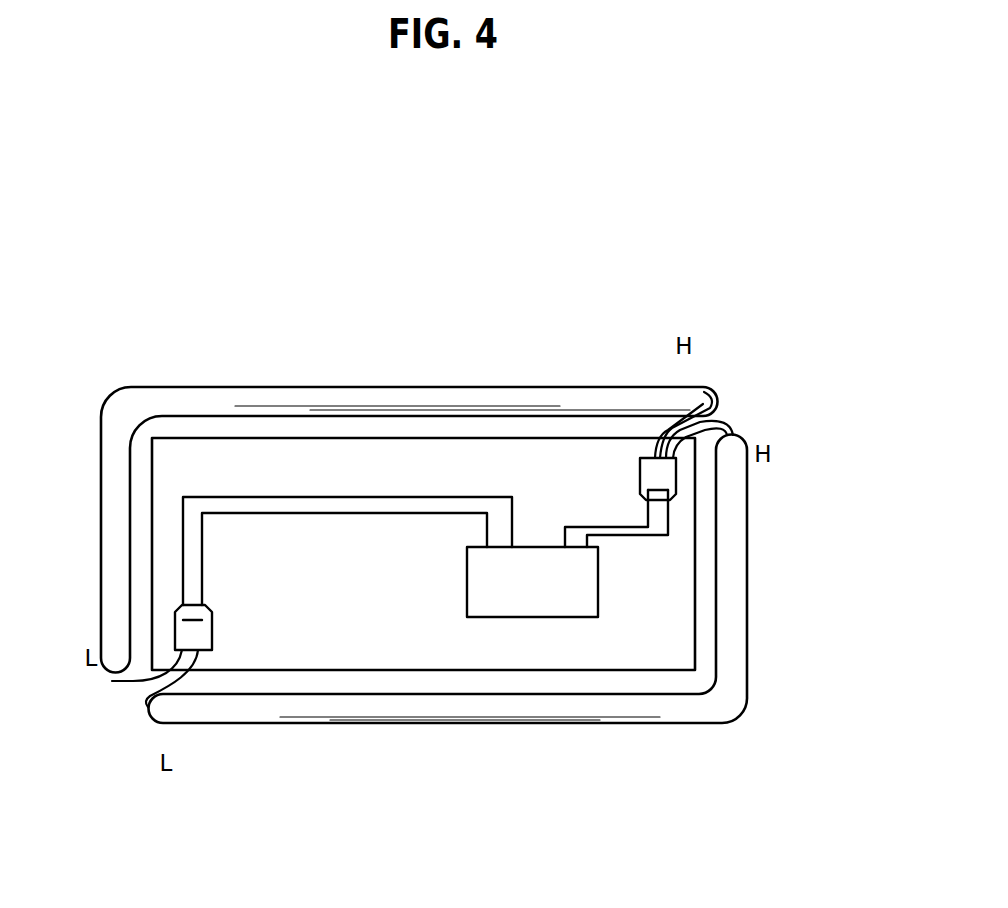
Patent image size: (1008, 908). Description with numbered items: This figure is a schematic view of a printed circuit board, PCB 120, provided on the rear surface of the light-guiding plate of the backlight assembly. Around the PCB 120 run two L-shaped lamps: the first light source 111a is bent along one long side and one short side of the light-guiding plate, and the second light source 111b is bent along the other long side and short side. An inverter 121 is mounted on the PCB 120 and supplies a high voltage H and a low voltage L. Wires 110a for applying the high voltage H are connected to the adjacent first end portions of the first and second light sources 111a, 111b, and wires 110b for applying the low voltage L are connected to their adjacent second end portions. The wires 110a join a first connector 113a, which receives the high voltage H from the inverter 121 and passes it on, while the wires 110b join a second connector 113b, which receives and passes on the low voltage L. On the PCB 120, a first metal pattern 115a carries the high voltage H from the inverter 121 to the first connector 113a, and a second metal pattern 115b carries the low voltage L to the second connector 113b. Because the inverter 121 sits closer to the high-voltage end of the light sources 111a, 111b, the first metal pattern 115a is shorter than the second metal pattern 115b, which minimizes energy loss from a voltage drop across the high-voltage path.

The printed circuit board 120 is at (488, 657).
The first light source 111a is at (740, 599).
The second light source 111b is at (203, 400).
The wires for applying a high voltage 110a is at (705, 395).
The wires for applying a low voltage 110b is at (112, 681).
The first connector 113a is at (640, 480).
The second connector 113b is at (212, 640).
The first metal pattern 115a is at (648, 537).
The second metal pattern 115b is at (343, 515).
The inverter 121 is at (467, 597).